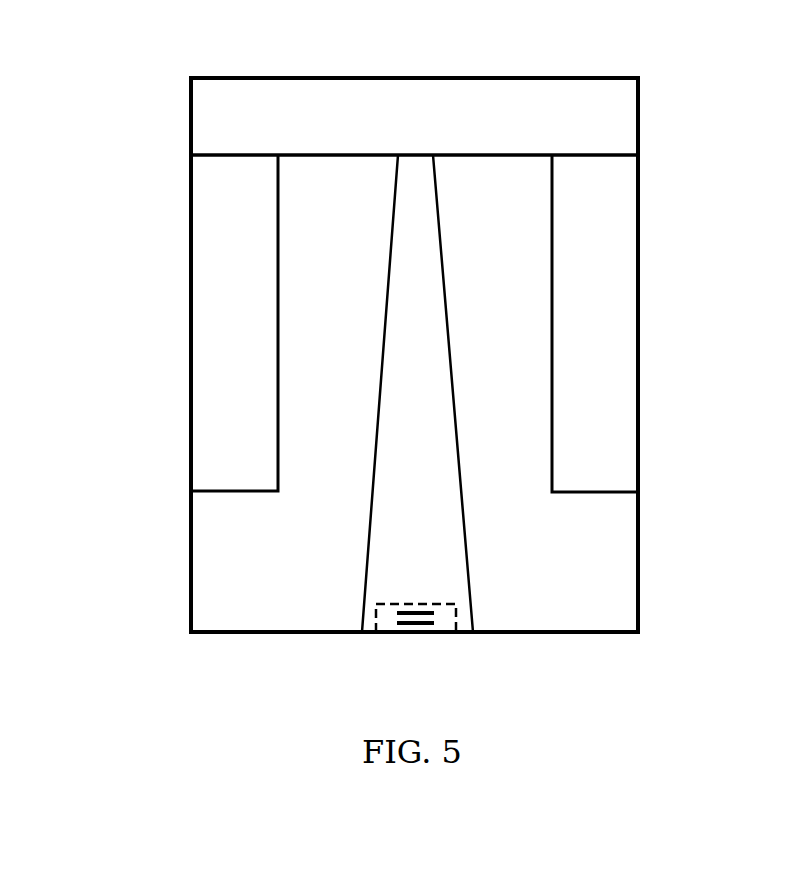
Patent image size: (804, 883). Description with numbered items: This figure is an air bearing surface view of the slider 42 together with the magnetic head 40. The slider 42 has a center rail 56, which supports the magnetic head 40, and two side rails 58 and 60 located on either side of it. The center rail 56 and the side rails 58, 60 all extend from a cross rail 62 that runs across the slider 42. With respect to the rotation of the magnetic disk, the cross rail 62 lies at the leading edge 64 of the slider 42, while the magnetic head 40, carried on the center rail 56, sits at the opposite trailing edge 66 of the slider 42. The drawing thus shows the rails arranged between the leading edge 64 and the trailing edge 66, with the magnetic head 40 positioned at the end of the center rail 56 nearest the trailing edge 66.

The magnetic head 40 is at (388, 636).
The slider 42 is at (186, 574).
The center rail 56 is at (402, 270).
The side rail 58 is at (205, 230).
The side rail 60 is at (612, 230).
The cross rail 62 is at (326, 86).
The leading edge 64 is at (483, 78).
The trailing edge 66 is at (534, 634).